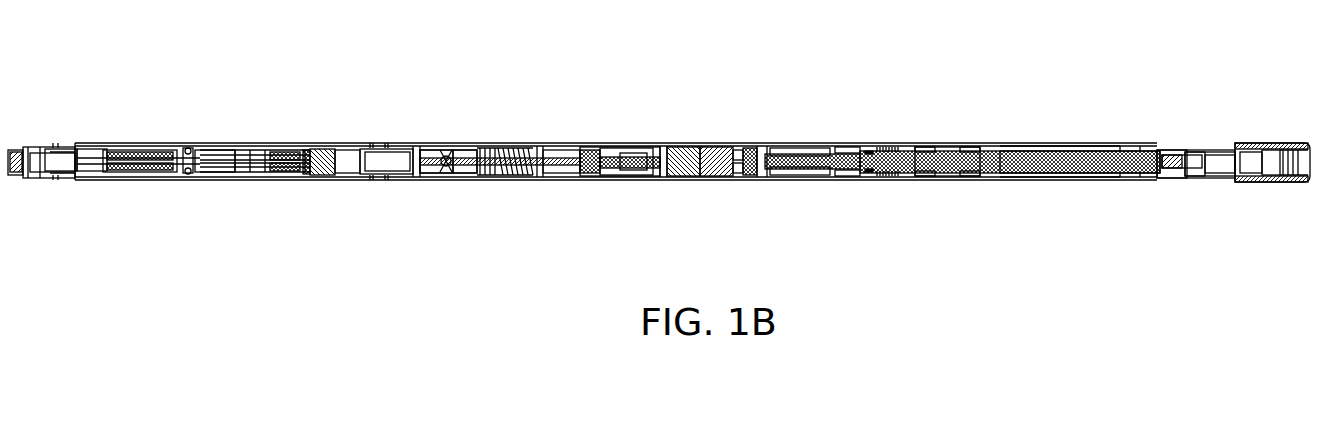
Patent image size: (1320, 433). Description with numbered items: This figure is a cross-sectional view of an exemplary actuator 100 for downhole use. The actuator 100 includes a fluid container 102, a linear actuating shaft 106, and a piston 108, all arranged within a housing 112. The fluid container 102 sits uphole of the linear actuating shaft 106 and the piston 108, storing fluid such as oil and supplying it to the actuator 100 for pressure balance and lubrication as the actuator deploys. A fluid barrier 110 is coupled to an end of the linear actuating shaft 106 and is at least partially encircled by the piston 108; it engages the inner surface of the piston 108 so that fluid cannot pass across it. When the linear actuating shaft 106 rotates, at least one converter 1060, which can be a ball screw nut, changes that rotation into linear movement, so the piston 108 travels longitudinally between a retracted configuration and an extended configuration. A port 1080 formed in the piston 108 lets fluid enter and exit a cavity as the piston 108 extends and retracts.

The actuator 100 is at (1107, 33).
The fluid container 102 is at (473, 152).
The linear actuating shaft 106 is at (1058, 158).
The piston 108 is at (1194, 149).
The fluid barrier 110 is at (1180, 177).
The housing 112 is at (1018, 145).
The converter 1060 is at (1007, 225).
The port 1080 is at (1190, 149).